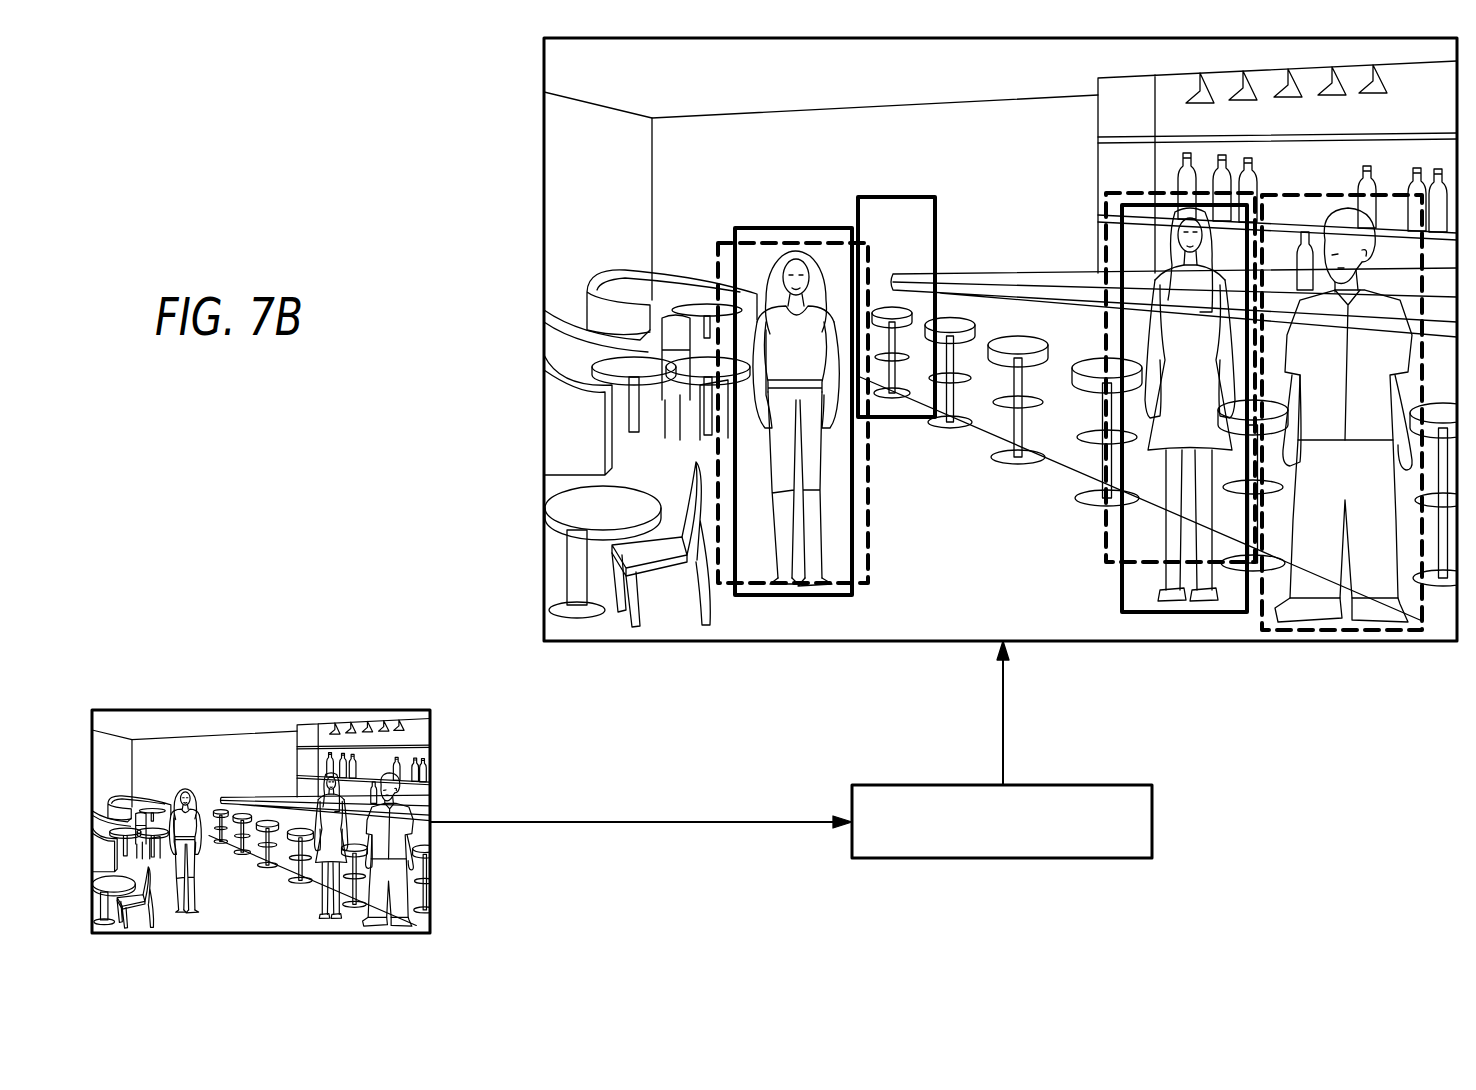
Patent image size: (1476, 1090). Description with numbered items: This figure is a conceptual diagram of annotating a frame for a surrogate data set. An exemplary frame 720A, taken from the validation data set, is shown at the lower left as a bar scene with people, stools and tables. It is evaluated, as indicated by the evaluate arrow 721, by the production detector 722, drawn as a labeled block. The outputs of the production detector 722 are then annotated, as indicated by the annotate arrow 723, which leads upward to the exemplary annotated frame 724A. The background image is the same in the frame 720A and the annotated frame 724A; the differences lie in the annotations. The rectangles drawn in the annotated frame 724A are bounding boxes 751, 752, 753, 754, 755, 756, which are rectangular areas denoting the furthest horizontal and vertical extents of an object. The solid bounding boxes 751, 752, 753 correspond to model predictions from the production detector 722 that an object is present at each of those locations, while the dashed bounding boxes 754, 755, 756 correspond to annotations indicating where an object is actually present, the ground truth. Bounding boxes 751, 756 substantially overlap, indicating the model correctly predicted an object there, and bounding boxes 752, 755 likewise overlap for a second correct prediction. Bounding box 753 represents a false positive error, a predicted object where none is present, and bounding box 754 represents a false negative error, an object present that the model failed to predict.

The exemplary frame 720A is at (195, 705).
The evaluate arrow 721 is at (620, 822).
The production detector 722 is at (1153, 822).
The annotate arrow 723 is at (1002, 716).
The exemplary annotated frame 724A is at (507, 163).
The bounding box 751 is at (1122, 602).
The bounding box 752 is at (805, 597).
The bounding box 753 is at (935, 240).
The bounding box 754 is at (1423, 601).
The bounding box 755 is at (868, 512).
The bounding box 756 is at (1106, 535).